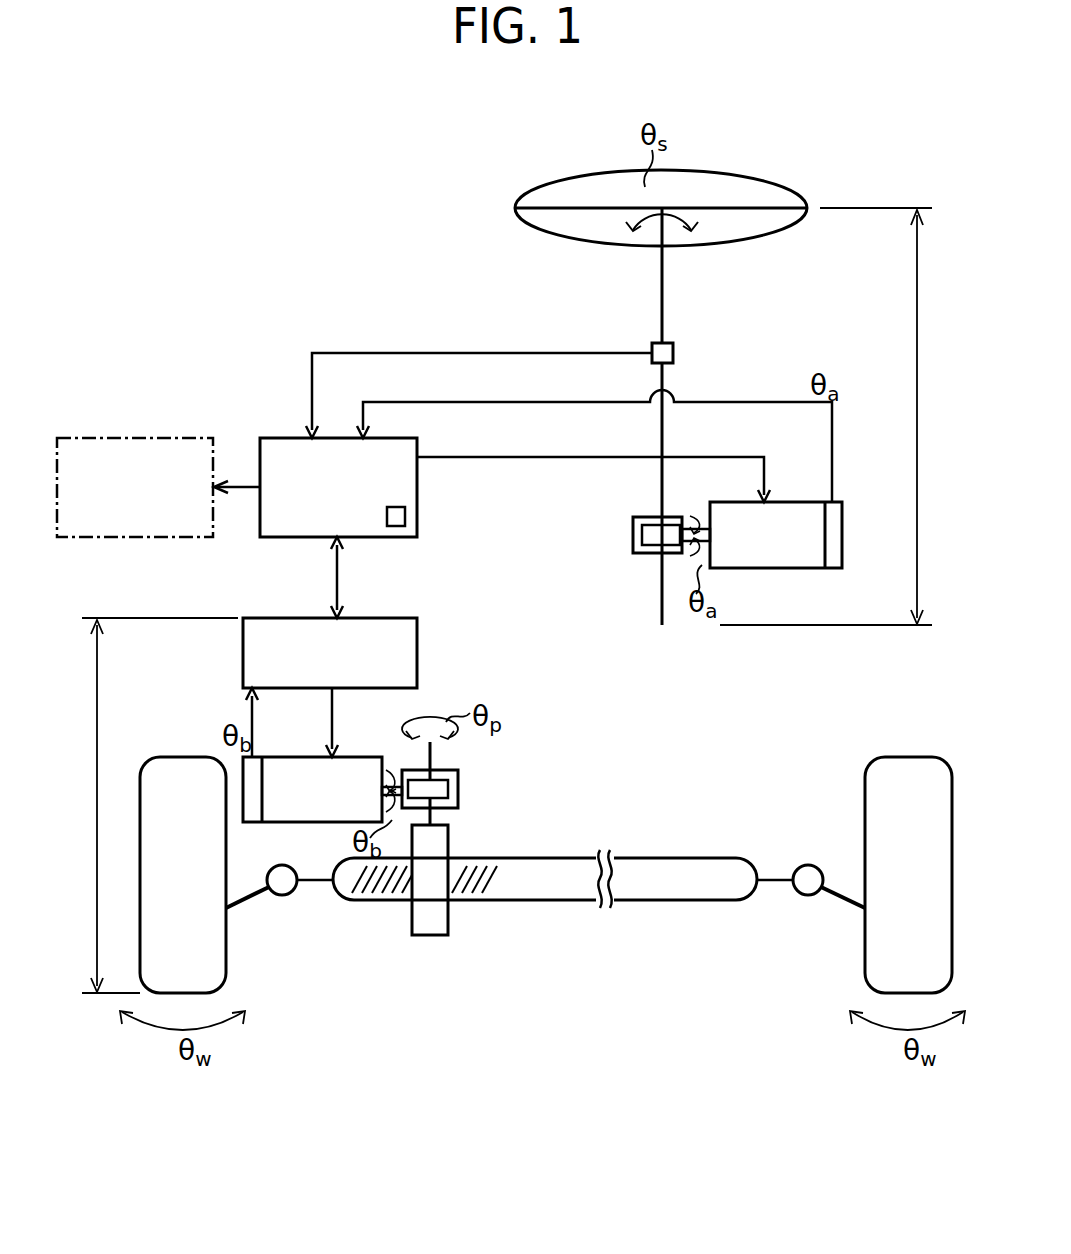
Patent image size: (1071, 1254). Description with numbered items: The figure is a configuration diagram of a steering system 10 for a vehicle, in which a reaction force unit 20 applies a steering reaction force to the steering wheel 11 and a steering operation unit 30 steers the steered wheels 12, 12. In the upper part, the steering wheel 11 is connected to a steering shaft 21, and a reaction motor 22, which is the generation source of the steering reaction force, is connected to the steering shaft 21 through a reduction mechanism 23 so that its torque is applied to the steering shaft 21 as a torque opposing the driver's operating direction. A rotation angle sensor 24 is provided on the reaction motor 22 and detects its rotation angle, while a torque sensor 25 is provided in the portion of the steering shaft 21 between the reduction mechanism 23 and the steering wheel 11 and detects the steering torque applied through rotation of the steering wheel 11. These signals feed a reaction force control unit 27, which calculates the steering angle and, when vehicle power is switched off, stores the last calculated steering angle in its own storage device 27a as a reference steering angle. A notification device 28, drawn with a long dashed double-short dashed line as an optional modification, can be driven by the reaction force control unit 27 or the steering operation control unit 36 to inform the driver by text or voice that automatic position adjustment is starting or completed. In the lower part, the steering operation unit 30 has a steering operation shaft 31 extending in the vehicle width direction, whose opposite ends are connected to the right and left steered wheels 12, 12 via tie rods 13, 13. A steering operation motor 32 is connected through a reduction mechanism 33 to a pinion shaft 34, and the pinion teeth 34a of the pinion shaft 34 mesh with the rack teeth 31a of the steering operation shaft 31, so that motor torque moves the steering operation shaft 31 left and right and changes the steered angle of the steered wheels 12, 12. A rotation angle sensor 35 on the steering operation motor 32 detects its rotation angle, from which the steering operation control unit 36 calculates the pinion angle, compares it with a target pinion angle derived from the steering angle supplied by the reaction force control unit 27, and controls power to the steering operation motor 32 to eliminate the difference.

The steering system 10 is at (831, 170).
The steering wheel 11 is at (747, 172).
The steered wheels 12 is at (228, 958).
The tie rods 13 is at (318, 895).
The reaction force unit 20 is at (917, 445).
The steering shaft 21 is at (665, 272).
The reaction motor 22 is at (790, 568).
The reduction mechanism 23 is at (628, 528).
The rotation angle sensor 24 is at (835, 568).
The torque sensor 25 is at (673, 353).
The reaction force control unit 27 is at (395, 437).
The storage device 27a is at (405, 517).
The notification device 28 is at (150, 437).
The steering operation unit 30 is at (97, 806).
The steering operation shaft 31 is at (545, 907).
The rack teeth 31a is at (463, 893).
The steering operation motor 32 is at (360, 757).
The reduction mechanism 33 is at (462, 802).
The pinion shaft 34 is at (435, 755).
The pinion teeth 34a is at (430, 935).
The rotation angle sensor 35 is at (250, 822).
The steering operation control unit 36 is at (243, 656).